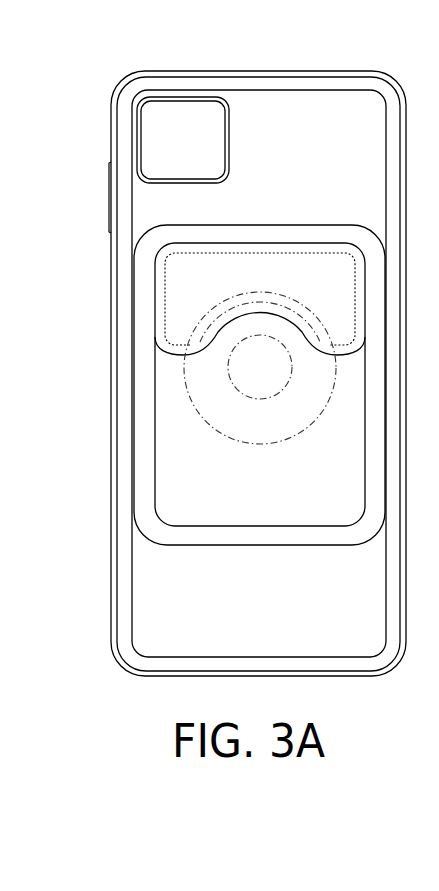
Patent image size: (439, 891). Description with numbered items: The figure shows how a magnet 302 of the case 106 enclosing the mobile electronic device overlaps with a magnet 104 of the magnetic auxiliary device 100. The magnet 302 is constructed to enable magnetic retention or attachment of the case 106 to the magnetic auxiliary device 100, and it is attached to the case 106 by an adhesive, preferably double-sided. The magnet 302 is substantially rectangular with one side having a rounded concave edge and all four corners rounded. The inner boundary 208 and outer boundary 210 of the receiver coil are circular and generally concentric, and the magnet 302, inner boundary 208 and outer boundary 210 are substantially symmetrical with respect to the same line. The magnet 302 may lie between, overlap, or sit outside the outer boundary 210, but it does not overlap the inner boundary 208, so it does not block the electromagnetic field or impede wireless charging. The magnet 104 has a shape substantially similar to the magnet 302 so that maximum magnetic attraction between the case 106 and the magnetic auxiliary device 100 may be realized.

The magnetic auxiliary device 100 is at (316, 233).
The case 106 is at (267, 107).
The magnet 302 is at (183, 293).
The magnet 104 is at (184, 356).
The inner boundary 208 is at (229, 376).
The outer boundary 210 is at (200, 413).